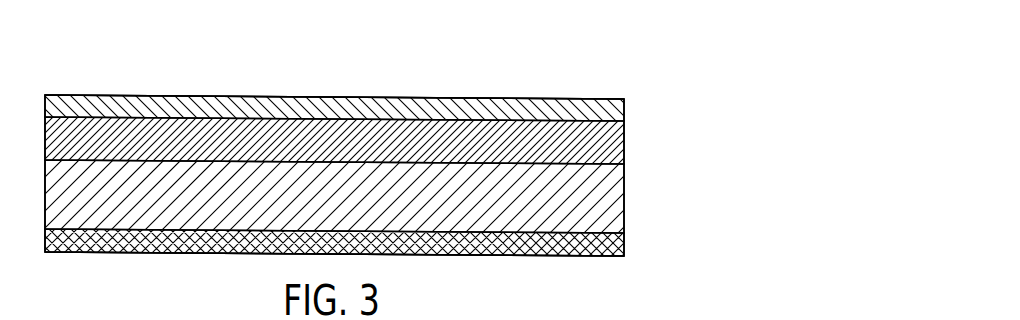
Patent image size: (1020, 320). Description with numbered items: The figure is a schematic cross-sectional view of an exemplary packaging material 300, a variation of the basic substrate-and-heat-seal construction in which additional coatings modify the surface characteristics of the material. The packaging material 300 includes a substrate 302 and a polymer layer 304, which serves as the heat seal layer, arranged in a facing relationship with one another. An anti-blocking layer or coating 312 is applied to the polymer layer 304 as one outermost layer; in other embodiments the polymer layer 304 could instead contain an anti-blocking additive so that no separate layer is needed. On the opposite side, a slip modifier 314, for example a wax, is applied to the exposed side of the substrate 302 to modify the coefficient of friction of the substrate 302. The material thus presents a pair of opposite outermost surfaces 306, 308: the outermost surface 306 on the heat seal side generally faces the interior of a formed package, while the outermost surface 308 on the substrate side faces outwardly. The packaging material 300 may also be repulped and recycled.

The packaging material 300 is at (648, 65).
The substrate 302 is at (625, 197).
The polymer layer 304 is at (625, 145).
The outermost surface 306 is at (390, 96).
The outermost surface 308 is at (203, 253).
The anti-blocking layer 312 is at (625, 108).
The slip modifier 314 is at (625, 242).